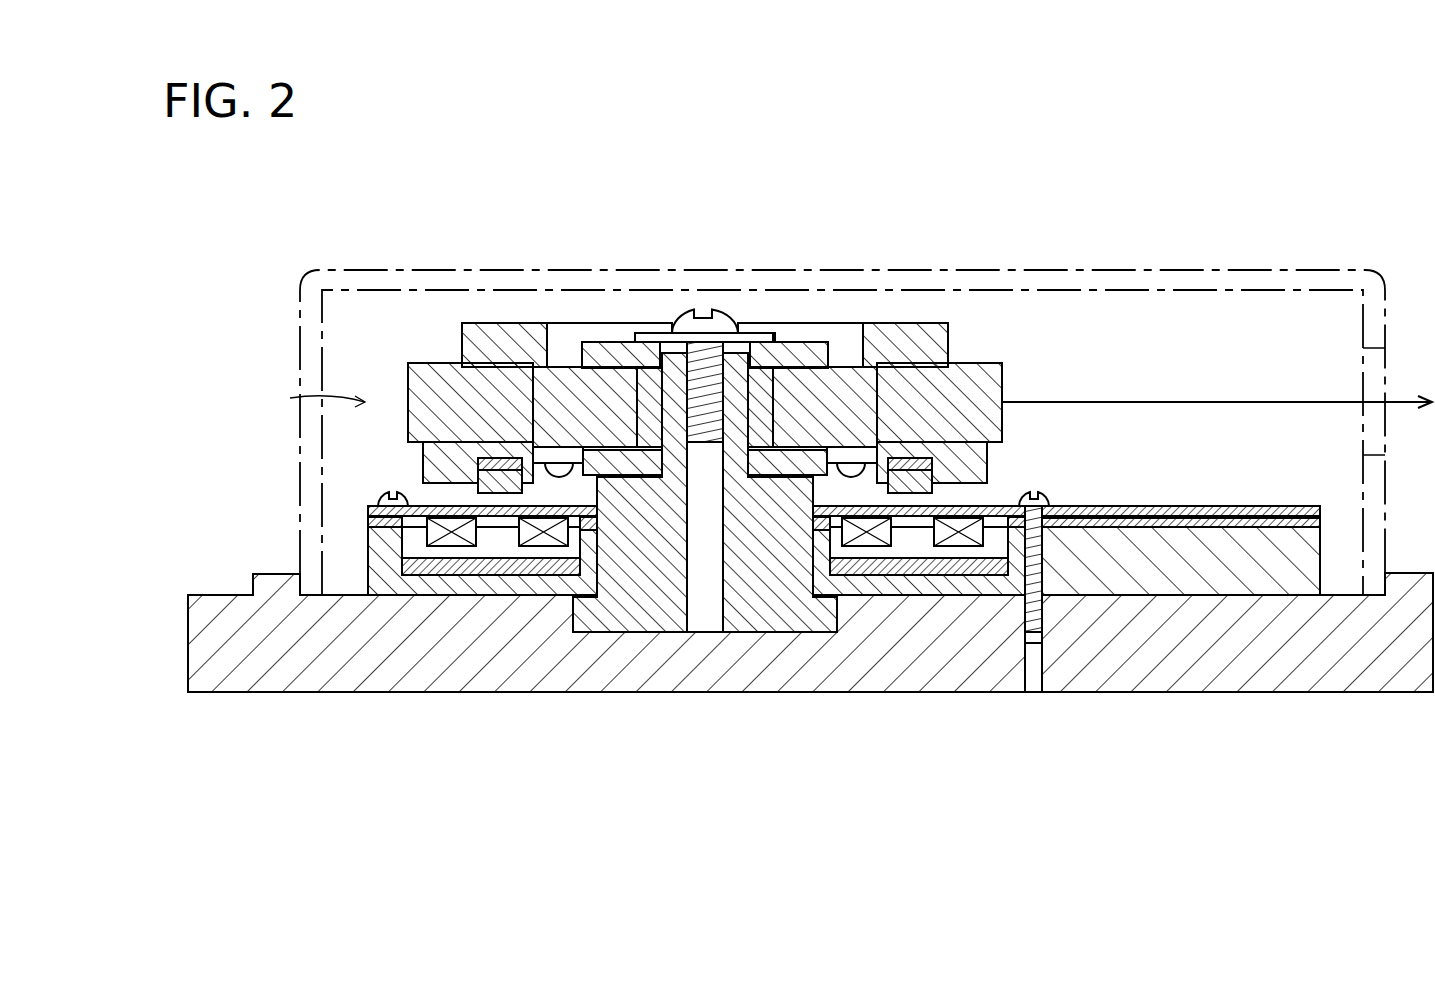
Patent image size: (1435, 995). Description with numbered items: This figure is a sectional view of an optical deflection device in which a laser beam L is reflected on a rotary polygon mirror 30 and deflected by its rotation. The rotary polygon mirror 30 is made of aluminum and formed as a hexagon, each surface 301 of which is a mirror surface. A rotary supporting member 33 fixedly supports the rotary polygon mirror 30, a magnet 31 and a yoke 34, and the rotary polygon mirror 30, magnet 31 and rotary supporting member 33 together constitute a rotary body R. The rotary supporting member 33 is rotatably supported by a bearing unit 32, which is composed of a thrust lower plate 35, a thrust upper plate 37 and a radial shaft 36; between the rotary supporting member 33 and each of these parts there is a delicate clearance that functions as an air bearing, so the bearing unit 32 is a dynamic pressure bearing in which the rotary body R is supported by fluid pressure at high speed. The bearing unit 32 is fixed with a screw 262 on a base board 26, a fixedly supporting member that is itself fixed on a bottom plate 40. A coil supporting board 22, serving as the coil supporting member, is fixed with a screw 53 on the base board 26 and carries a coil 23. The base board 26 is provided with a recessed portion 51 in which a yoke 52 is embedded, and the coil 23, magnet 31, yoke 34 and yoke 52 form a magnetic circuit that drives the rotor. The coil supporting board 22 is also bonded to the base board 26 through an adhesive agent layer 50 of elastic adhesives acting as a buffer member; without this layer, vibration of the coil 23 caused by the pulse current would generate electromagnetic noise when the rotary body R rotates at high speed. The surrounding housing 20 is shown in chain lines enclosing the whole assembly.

The housing 20 is at (345, 270).
The coil supporting board 22 is at (1152, 508).
The coil 23 is at (423, 592).
The base board 26 is at (765, 632).
The screw 262 is at (703, 370).
The rotary polygon mirror 30 is at (980, 372).
The surface 301 is at (1002, 383).
The magnet 31 is at (478, 482).
The bearing unit 32 is at (787, 330).
The rotary supporting member 33 is at (838, 388).
The yoke 34 is at (490, 455).
The thrust lower plate 35 is at (600, 540).
The radial shaft 36 is at (655, 460).
The thrust upper plate 37 is at (602, 350).
The bottom plate 40 is at (1112, 680).
The adhesive agent layer 50 is at (368, 540).
The recessed portion 51 is at (417, 542).
The yoke 52 is at (447, 560).
The screw 53 is at (393, 494).
The laser beam L is at (1107, 402).
The rotary body R is at (310, 400).